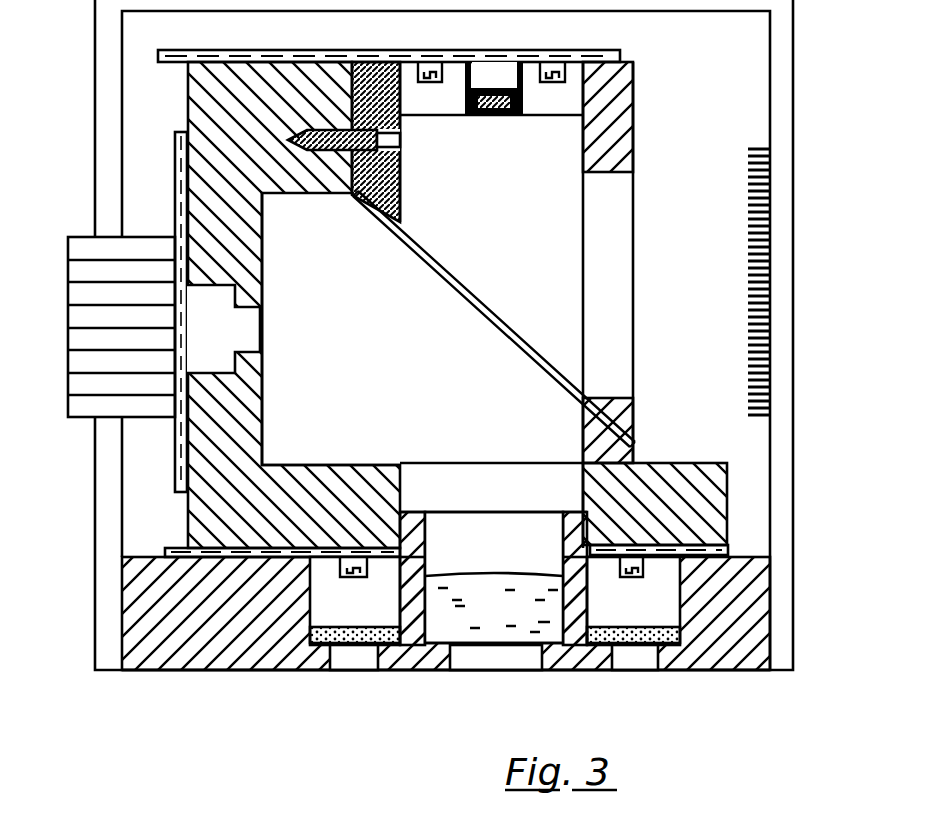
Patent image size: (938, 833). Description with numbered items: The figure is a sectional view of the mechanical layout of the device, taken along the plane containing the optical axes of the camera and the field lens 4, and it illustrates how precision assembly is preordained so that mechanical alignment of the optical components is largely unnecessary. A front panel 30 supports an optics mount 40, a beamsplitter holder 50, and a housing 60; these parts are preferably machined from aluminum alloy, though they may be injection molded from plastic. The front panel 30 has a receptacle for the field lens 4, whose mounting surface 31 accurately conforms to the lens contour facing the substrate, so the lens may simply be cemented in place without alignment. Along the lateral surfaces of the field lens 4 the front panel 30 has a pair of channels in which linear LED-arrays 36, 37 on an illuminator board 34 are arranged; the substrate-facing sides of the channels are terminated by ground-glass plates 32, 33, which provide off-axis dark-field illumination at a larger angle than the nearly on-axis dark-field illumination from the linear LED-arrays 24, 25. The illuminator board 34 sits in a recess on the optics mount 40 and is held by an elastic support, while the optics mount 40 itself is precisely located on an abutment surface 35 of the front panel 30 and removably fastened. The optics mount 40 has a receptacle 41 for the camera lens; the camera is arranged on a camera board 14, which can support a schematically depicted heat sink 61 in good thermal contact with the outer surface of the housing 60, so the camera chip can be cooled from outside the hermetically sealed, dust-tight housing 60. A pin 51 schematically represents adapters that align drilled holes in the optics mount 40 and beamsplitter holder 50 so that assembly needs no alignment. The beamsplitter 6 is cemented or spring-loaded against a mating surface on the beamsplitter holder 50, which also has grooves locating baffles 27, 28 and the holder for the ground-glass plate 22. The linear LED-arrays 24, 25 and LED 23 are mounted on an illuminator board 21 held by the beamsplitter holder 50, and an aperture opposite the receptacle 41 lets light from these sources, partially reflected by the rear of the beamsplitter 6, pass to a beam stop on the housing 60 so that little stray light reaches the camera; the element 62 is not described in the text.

The field lens 4 is at (487, 577).
The beamsplitter 6 is at (532, 356).
The camera board 14 is at (176, 470).
The illuminator board 21 is at (620, 52).
The ground-glass plate 22 is at (488, 114).
The LED 23 is at (490, 72).
The linear LED-array 24 is at (553, 72).
The linear LED-array 25 is at (426, 70).
The baffle 27 is at (462, 112).
The baffle 28 is at (528, 114).
The front panel 30 is at (762, 620).
The mounting surface 31 is at (455, 645).
The ground-glass plate 32 is at (358, 645).
The ground-glass plate 33 is at (637, 645).
The illuminator board 34 is at (705, 547).
The abutment surface 35 is at (150, 556).
The linear LED-array 36 is at (343, 578).
The linear LED-array 37 is at (630, 578).
The optics mount 40 is at (202, 88).
The receptacle 41 is at (208, 372).
The beamsplitter holder 50 is at (625, 118).
The pin 51 is at (402, 137).
The housing 60 is at (788, 104).
The heat sink 61 is at (748, 238).
The connector 62 is at (77, 270).